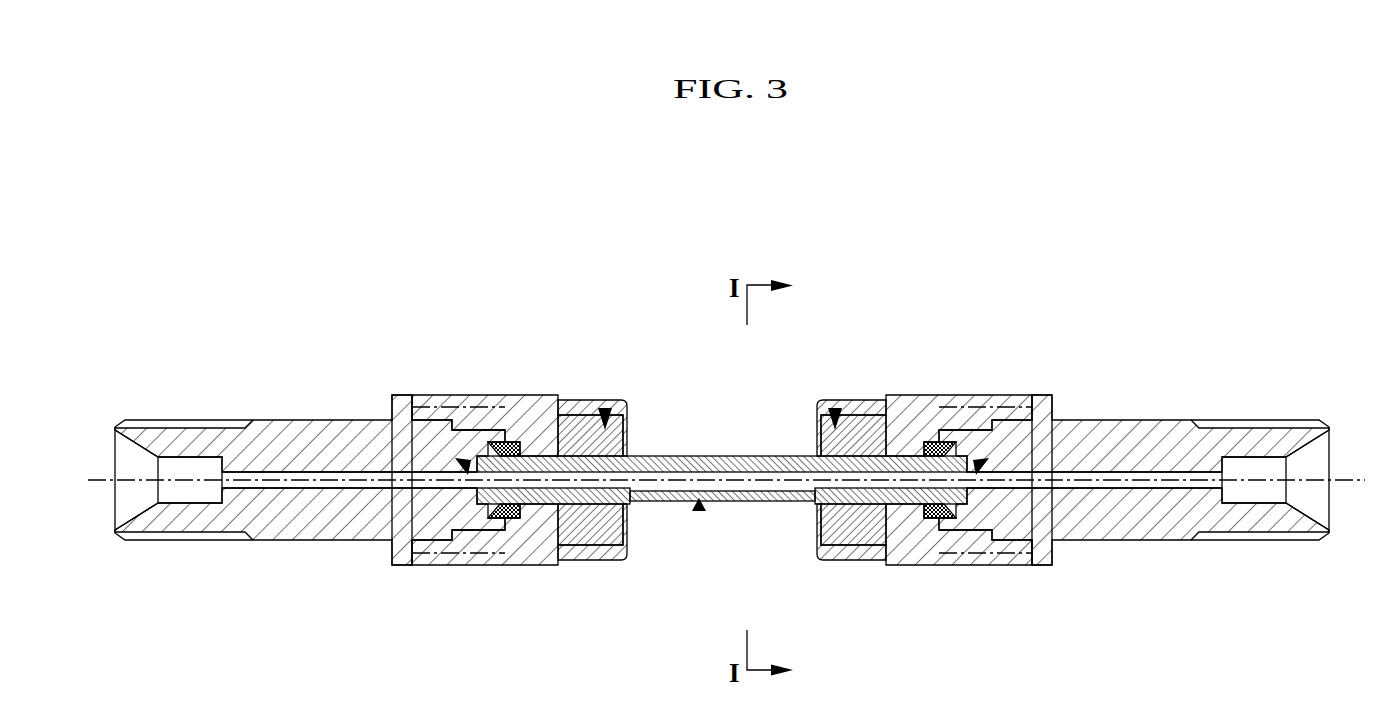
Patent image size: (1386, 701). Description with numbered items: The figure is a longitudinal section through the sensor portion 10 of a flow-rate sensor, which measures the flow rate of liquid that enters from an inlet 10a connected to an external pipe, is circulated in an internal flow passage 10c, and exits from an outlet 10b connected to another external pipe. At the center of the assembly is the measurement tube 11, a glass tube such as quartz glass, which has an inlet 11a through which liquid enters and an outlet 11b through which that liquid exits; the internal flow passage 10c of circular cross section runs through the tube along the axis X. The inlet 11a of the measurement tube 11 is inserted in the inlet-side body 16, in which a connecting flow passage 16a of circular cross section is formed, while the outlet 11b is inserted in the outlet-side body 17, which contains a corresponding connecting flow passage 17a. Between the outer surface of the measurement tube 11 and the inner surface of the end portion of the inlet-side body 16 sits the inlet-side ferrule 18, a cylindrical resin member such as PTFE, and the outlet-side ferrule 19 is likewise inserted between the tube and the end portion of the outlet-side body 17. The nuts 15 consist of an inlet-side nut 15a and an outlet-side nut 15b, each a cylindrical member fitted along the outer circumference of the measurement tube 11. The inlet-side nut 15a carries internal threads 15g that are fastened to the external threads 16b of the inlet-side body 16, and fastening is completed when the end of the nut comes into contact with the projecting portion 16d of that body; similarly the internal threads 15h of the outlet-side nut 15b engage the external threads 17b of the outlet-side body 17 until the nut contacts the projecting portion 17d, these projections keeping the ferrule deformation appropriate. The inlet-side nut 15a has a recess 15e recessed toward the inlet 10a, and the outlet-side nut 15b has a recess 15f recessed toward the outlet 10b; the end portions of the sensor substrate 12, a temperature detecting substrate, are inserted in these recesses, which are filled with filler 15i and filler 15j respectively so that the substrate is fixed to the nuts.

The sensor portion 10 is at (726, 435).
The inlet 10a is at (125, 442).
The outlet 10b is at (1313, 455).
The internal flow passage 10c is at (699, 512).
The measurement tube 11 is at (719, 479).
The inlet 11a is at (460, 456).
The outlet 11b is at (983, 460).
The sensor substrate 12 is at (752, 504).
The nuts 15 is at (722, 495).
The inlet-side nut 15a is at (523, 490).
The outlet-side nut 15b is at (918, 495).
The recess 15e is at (605, 408).
The recess 15f is at (834, 408).
The internal threads 15g is at (452, 422).
The internal threads 15h is at (982, 420).
The filler 15i is at (600, 534).
The filler 15j is at (850, 526).
The inlet-side body 16 is at (318, 542).
The connecting flow passage 16a is at (267, 488).
The external threads 16b is at (455, 532).
The projecting portion 16d is at (398, 568).
The outlet-side body 17 is at (1092, 542).
The connecting flow passage 17a is at (1160, 488).
The external threads 17b is at (972, 546).
The projecting portion 17d is at (1040, 568).
The inlet-side ferrule 18 is at (505, 522).
The outlet-side ferrule 19 is at (930, 520).
The axis X is at (1258, 486).